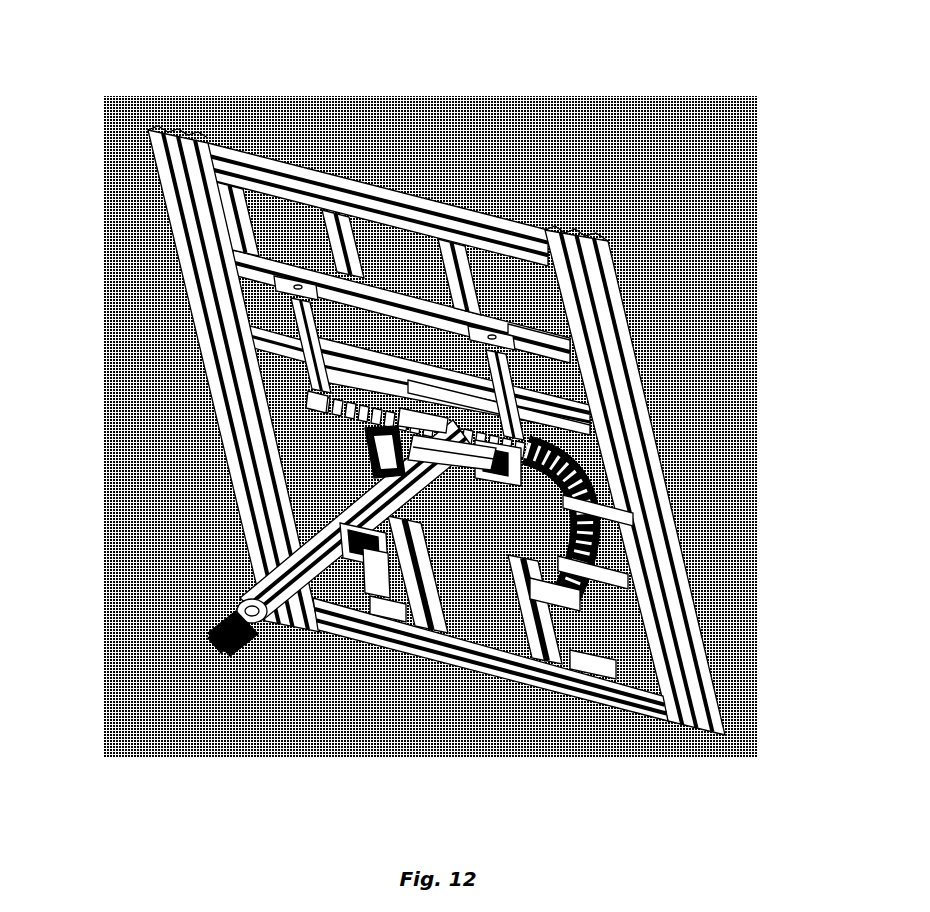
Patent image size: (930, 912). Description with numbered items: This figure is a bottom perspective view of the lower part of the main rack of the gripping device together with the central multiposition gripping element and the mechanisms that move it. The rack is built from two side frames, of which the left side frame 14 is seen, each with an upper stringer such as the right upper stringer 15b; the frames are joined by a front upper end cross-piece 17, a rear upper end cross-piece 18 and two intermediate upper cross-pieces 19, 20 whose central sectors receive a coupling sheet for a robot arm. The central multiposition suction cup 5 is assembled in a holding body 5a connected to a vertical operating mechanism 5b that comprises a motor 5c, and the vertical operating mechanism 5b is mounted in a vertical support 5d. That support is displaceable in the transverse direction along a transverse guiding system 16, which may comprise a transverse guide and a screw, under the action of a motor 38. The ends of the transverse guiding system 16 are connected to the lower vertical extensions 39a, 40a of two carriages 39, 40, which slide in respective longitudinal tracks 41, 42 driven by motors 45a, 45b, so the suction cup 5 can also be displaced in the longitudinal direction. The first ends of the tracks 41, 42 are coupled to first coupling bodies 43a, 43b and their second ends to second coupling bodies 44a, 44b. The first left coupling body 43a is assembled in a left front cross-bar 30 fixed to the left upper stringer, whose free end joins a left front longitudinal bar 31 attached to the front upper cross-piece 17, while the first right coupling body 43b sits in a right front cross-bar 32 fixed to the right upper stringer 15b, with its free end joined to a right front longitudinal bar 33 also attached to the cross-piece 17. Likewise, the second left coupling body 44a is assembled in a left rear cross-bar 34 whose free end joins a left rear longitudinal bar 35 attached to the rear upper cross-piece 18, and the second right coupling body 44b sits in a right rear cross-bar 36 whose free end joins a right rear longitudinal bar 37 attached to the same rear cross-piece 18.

The central multiposition suction cup 5 is at (212, 640).
The holding body 5a is at (243, 578).
The vertical operating mechanism 5b is at (255, 542).
The motor 5c is at (360, 470).
The vertical support 5d is at (393, 450).
The side frame 14 is at (160, 210).
The upper stringer 15b is at (587, 280).
The transverse guiding system 16 is at (437, 430).
The front upper end cross-piece 17 is at (360, 180).
The rear upper end cross-piece 18 is at (627, 700).
The intermediate upper cross-piece 19 is at (545, 400).
The intermediate upper cross-piece 20 is at (587, 503).
The left front cross-bar 30 is at (262, 262).
The left front longitudinal bar 31 is at (303, 196).
The right front cross-bar 32 is at (540, 333).
The right front longitudinal bar 33 is at (418, 330).
The left rear cross-bar 34 is at (600, 578).
The left rear longitudinal bar 35 is at (527, 580).
The right rear cross-bar 36 is at (383, 520).
The right rear longitudinal bar 37 is at (393, 545).
The motor 38 is at (543, 467).
The carriage 39 is at (293, 380).
The lower vertical extension 39a is at (300, 415).
The carriage 40 is at (555, 397).
The lower vertical extension 40a is at (487, 445).
The longitudinal track 41 is at (293, 315).
The longitudinal track 42 is at (485, 363).
The first coupling body 43a is at (268, 274).
The first coupling body 43b is at (485, 323).
The second coupling body 44a is at (350, 552).
The second coupling body 44b is at (572, 592).
The motor 45a is at (375, 560).
The motor 45b is at (562, 672).